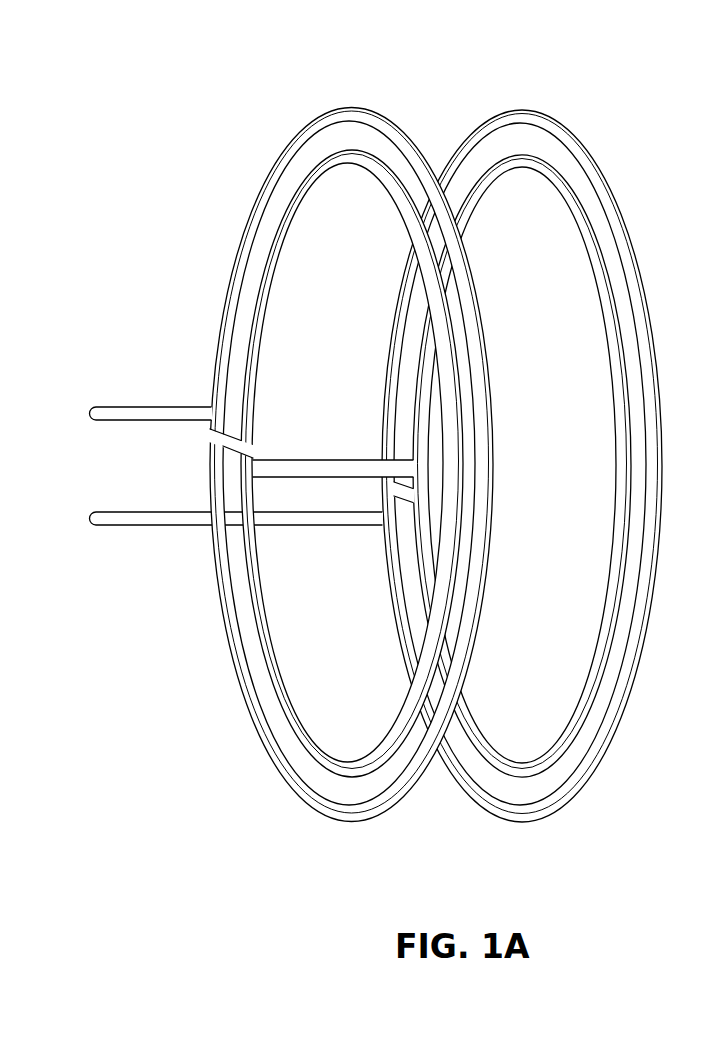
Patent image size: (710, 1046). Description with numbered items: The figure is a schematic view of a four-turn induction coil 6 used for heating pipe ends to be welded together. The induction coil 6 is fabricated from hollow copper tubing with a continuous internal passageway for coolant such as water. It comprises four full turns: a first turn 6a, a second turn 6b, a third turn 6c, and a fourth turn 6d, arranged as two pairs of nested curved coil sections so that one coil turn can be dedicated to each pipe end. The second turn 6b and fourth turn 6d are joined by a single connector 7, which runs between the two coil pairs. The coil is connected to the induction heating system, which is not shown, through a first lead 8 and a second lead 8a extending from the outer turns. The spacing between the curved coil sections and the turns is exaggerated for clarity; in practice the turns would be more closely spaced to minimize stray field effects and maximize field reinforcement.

The induction coil 6 is at (376, 477).
The first turn 6a is at (265, 178).
The second turn 6b is at (296, 737).
The third turn 6c is at (550, 116).
The fourth turn 6d is at (558, 194).
The connector 7 is at (333, 461).
The first lead 8 is at (139, 408).
The second lead 8a is at (150, 513).